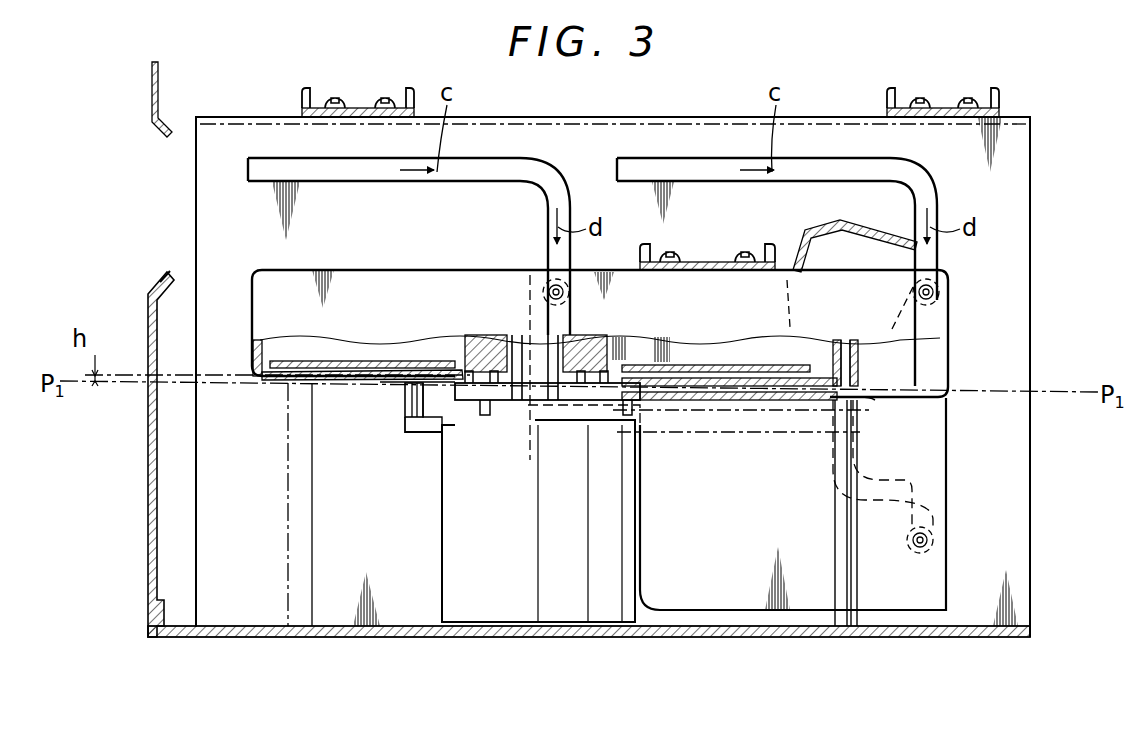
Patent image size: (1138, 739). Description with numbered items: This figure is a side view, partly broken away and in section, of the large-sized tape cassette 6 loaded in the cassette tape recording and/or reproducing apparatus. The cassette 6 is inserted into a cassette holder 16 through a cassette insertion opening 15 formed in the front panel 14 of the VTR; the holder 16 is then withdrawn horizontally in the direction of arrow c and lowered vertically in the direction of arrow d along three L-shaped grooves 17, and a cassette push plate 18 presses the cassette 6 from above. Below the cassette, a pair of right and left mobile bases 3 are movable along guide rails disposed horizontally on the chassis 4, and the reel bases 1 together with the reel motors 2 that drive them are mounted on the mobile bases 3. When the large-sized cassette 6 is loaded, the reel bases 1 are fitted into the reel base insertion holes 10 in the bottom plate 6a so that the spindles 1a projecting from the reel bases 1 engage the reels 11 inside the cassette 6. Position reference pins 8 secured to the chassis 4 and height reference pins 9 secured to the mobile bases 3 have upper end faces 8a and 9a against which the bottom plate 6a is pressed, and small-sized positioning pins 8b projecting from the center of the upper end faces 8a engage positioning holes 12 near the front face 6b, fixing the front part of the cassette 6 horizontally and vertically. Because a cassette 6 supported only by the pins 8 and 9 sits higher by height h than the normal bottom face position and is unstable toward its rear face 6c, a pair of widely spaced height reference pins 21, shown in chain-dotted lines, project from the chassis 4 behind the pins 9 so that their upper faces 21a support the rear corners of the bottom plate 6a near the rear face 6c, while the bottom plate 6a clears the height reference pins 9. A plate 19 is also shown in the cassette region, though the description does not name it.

The reel base 1 is at (462, 402).
The spindle 1a is at (545, 330).
The reel motor 2 is at (483, 605).
The mobile base 3 is at (420, 426).
The chassis 4 is at (576, 638).
The large-sized tape cassette 6 is at (427, 282).
The bottom plate 6a is at (395, 381).
The front face 6b is at (949, 369).
The rear face 6c is at (256, 290).
The position reference pin 8 is at (848, 580).
The upper end face 8a is at (885, 398).
The small-sized positioning pin 8b is at (862, 352).
The height reference pin 9 is at (412, 402).
The upper end face 9a is at (408, 400).
The reel base insertion hole 10 is at (452, 400).
The reel 11 is at (518, 333).
The positioning hole 12 is at (838, 360).
The front panel 14 is at (148, 450).
The cassette insertion opening 15 is at (170, 270).
The cassette holder 16 is at (708, 401).
The L-shaped groove 17 is at (357, 160).
The cassette push plate 18 is at (707, 261).
The guide plate 19 is at (392, 358).
The height reference pin 21 is at (295, 600).
The upper face 21a is at (285, 384).